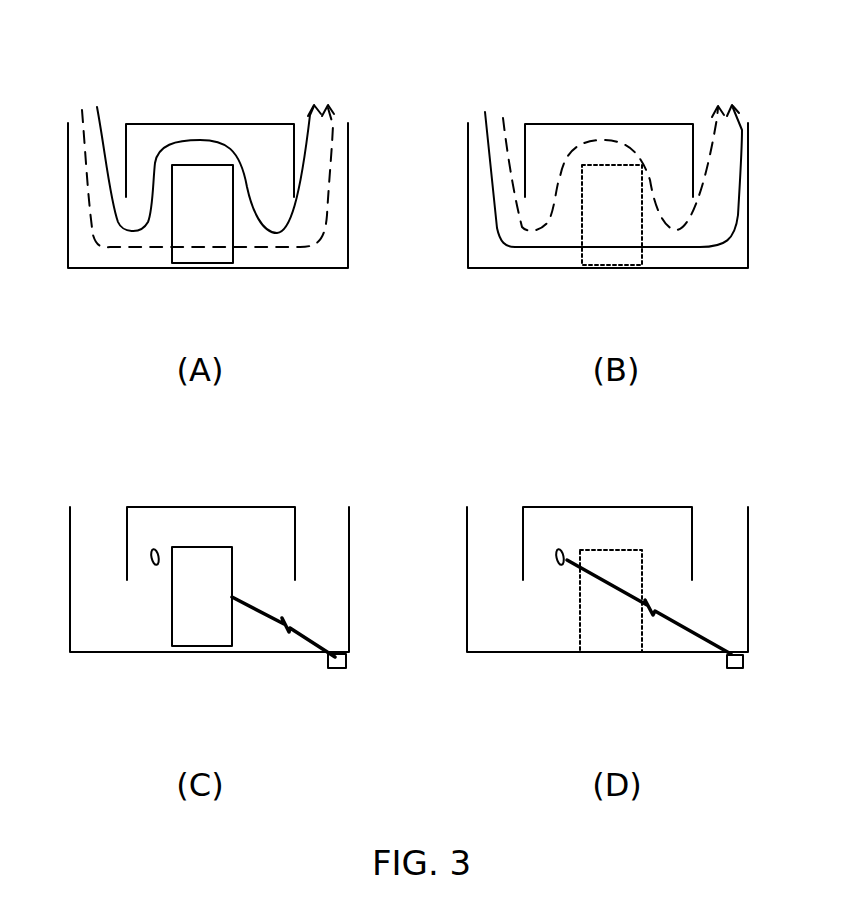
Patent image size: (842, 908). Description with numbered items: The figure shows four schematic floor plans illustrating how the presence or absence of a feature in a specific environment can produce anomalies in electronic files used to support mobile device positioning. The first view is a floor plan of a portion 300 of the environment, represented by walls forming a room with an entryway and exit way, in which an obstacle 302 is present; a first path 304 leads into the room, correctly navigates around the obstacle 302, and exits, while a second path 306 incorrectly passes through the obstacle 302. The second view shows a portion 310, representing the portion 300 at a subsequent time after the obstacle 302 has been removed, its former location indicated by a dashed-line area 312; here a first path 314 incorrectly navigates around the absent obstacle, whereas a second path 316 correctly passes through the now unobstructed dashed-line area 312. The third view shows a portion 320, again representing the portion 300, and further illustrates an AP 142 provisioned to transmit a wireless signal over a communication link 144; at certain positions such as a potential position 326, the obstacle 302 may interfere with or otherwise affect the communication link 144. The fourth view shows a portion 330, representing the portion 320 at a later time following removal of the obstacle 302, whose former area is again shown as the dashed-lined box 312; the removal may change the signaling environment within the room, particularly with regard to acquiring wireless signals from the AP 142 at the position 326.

The portion of a specific environment 300 is at (151, 305).
The obstacle 302 is at (223, 226).
The first path 304 is at (104, 111).
The second path 306 is at (84, 102).
The portion 310 is at (551, 305).
The dashed-line area 312 is at (632, 226).
The first path 314 is at (511, 112).
The second path 316 is at (490, 104).
The portion 320 is at (151, 702).
The potential position 326 is at (157, 549).
The portion 330 is at (551, 702).
The communication link 144 is at (307, 640).
The AP 142 is at (337, 668).